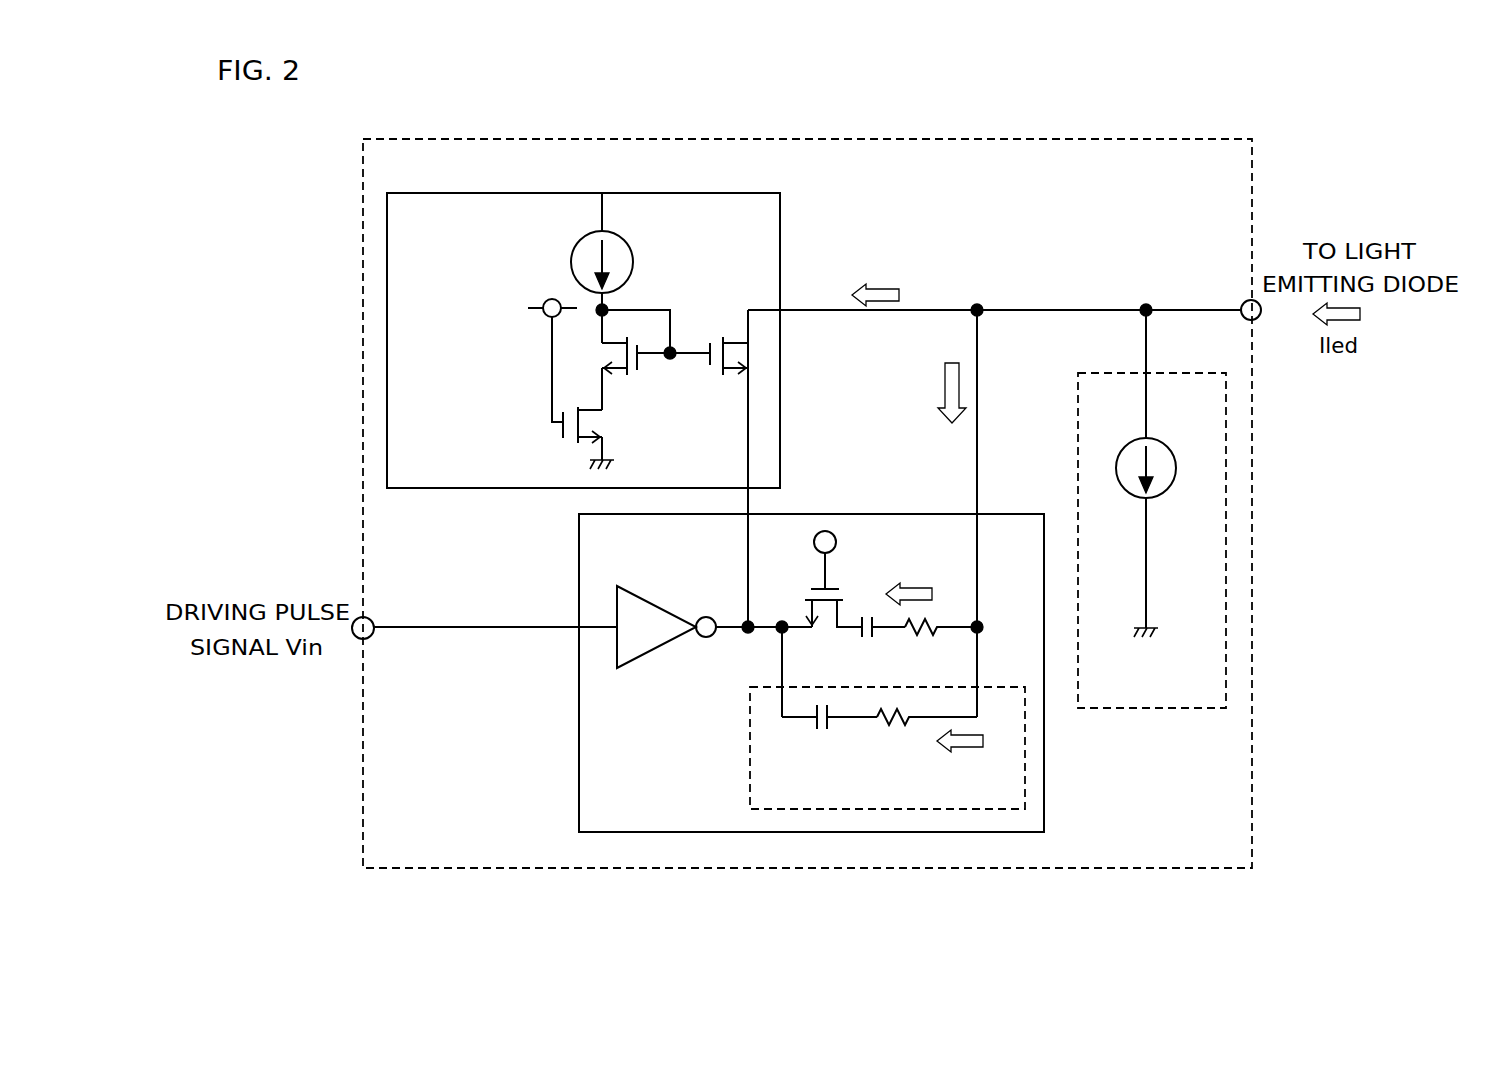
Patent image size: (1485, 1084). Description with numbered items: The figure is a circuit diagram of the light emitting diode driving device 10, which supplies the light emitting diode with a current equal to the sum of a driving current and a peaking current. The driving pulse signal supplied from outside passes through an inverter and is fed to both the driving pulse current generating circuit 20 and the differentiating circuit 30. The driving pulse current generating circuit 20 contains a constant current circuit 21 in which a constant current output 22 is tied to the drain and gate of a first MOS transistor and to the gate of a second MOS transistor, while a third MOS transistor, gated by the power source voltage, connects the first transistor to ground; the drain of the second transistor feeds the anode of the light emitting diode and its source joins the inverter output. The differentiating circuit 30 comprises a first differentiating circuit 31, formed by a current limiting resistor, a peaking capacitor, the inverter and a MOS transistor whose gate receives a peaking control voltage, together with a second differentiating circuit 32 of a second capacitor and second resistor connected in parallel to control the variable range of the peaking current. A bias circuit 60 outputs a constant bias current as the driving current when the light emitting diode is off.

The light emitting diode driving device 10 is at (1099, 136).
The driving pulse current generating circuit 20 is at (781, 205).
The constant current circuit 21 is at (664, 272).
The constant current output 22 is at (620, 232).
The differentiating circuit 30 is at (1045, 768).
The first differentiating circuit 31 is at (619, 556).
The second differentiating circuit 32 is at (750, 748).
The bias circuit 60 is at (1077, 393).